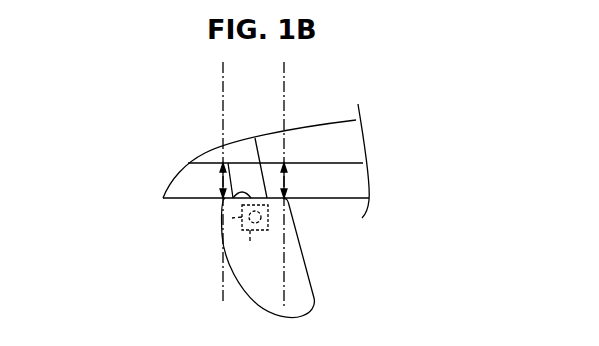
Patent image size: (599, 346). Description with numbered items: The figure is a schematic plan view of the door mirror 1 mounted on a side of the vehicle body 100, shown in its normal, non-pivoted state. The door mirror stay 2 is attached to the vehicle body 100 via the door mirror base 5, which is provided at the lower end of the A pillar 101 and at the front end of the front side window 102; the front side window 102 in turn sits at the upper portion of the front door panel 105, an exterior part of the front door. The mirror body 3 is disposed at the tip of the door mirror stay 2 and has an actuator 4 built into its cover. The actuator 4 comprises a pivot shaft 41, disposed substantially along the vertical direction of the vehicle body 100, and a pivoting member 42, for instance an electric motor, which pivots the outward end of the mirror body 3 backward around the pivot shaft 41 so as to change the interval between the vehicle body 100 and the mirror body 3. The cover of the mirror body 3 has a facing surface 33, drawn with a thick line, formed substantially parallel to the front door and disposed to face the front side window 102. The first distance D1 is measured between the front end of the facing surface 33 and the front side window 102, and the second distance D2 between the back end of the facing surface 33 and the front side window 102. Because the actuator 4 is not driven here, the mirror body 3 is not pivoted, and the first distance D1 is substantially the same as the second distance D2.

The vehicle body 100 is at (277, 165).
The A pillar 101 is at (360, 114).
The front side window 102 is at (352, 144).
The front door panel 105 is at (360, 189).
The door mirror base 5 is at (212, 157).
The door mirror stay 2 is at (243, 173).
The door mirror 1 is at (249, 259).
The mirror body 3 is at (310, 292).
The facing surface 33 is at (229, 198).
The actuator 4 is at (183, 261).
The pivot shaft 41 is at (236, 218).
The pivoting member 42 is at (250, 242).
The first distance D1 is at (208, 180).
The second distance D2 is at (297, 180).